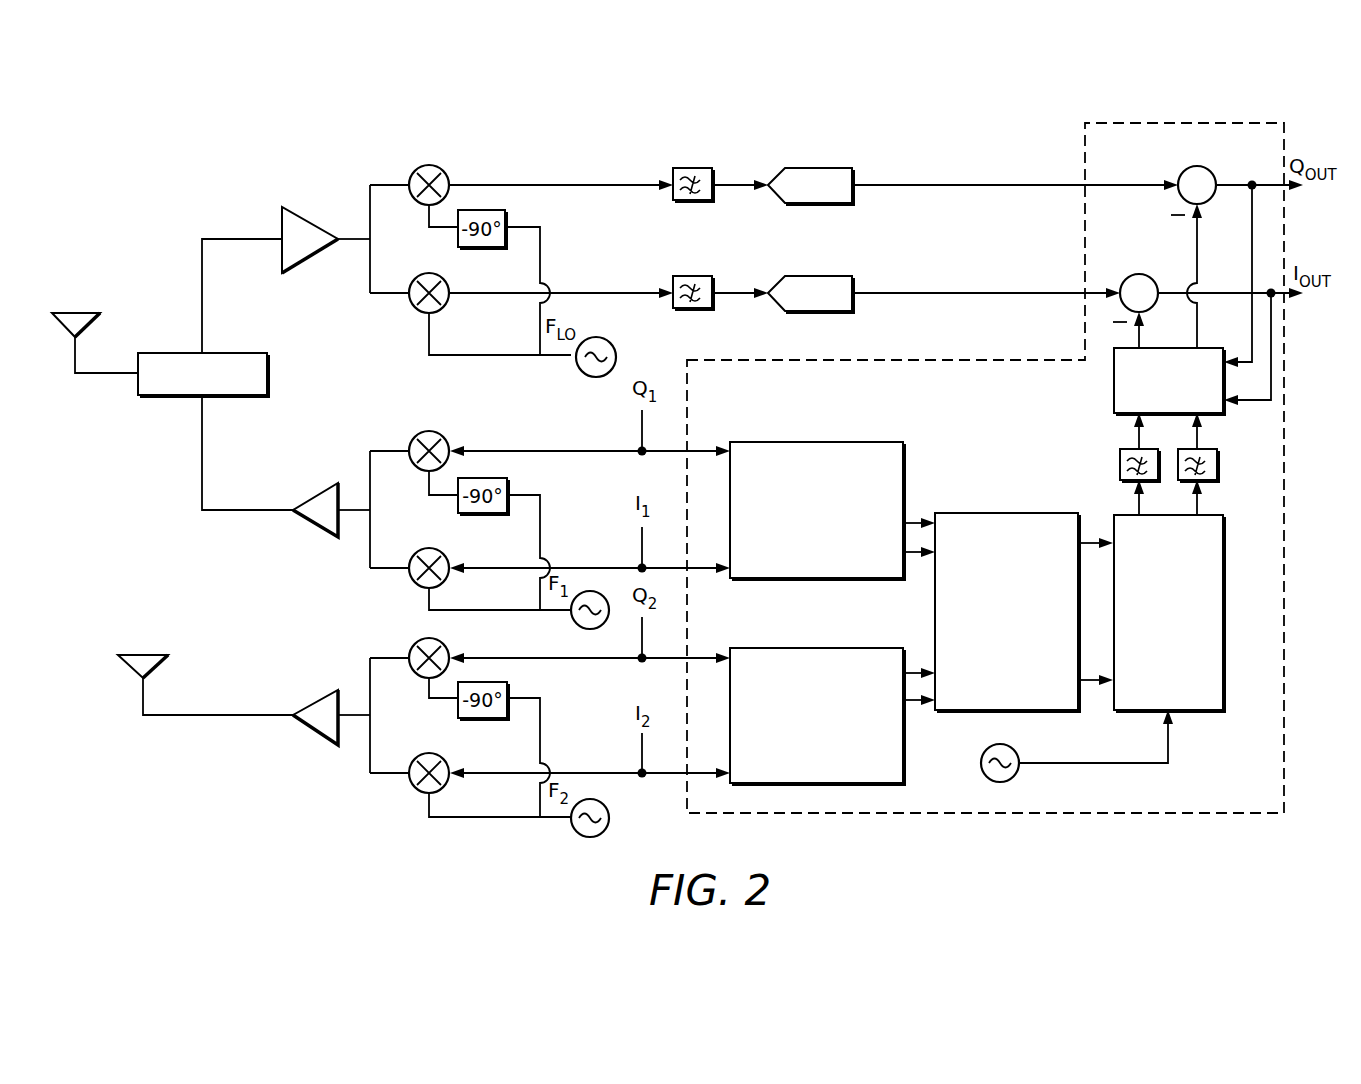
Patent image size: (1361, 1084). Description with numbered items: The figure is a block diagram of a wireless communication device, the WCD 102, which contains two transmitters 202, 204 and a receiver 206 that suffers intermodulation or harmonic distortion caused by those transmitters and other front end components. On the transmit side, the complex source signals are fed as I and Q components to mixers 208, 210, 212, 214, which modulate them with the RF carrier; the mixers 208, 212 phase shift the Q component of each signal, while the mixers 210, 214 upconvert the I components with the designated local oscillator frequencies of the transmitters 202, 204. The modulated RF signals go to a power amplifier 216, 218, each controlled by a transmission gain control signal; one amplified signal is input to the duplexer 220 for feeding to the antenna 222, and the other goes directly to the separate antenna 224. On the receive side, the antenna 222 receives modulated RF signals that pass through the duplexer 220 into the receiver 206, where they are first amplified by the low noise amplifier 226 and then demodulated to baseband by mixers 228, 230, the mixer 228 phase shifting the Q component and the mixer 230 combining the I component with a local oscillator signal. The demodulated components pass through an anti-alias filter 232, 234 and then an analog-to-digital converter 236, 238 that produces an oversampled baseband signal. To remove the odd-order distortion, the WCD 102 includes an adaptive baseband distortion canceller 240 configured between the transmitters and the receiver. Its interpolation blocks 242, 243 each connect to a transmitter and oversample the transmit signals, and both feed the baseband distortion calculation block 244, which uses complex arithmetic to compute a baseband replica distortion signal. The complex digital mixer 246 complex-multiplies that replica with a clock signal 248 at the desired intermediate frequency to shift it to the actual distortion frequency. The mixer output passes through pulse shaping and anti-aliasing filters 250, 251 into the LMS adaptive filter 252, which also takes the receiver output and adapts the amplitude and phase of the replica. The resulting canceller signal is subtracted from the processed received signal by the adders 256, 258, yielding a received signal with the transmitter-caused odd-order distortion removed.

The wireless communication device (WCD) 102 is at (177, 143).
The transmitter 202 is at (287, 467).
The transmitter 204 is at (292, 635).
The receiver 206 is at (162, 243).
The mixer 208 is at (430, 430).
The mixer 210 is at (430, 547).
The mixer 212 is at (428, 637).
The mixer 214 is at (430, 752).
The power amplifier 216 is at (312, 495).
The power amplifier 218 is at (313, 700).
The duplexer 220 is at (240, 352).
The antenna 222 is at (75, 310).
The antenna 224 is at (143, 653).
The low noise amplifier (LNA) 226 is at (307, 222).
The mixer 228 is at (430, 164).
The mixer 230 is at (428, 272).
The anti-alias filter 232 is at (693, 167).
The anti-alias filter 234 is at (693, 275).
The analog-to-digital converter 236 is at (818, 167).
The analog-to-digital converter 238 is at (818, 275).
The adaptive baseband distortion canceller 240 is at (950, 813).
The interpolation block 242 is at (877, 441).
The interpolation block 243 is at (877, 647).
The baseband distortion calculation block 244 is at (1003, 513).
The complex digital mixer 246 is at (1212, 514).
The clock signal 248 is at (996, 745).
The filter 250 is at (1120, 462).
The filter 251 is at (1210, 447).
The LMS adaptive filter 252 is at (1122, 416).
The adder 256 is at (1195, 165).
The adder 258 is at (1138, 273).